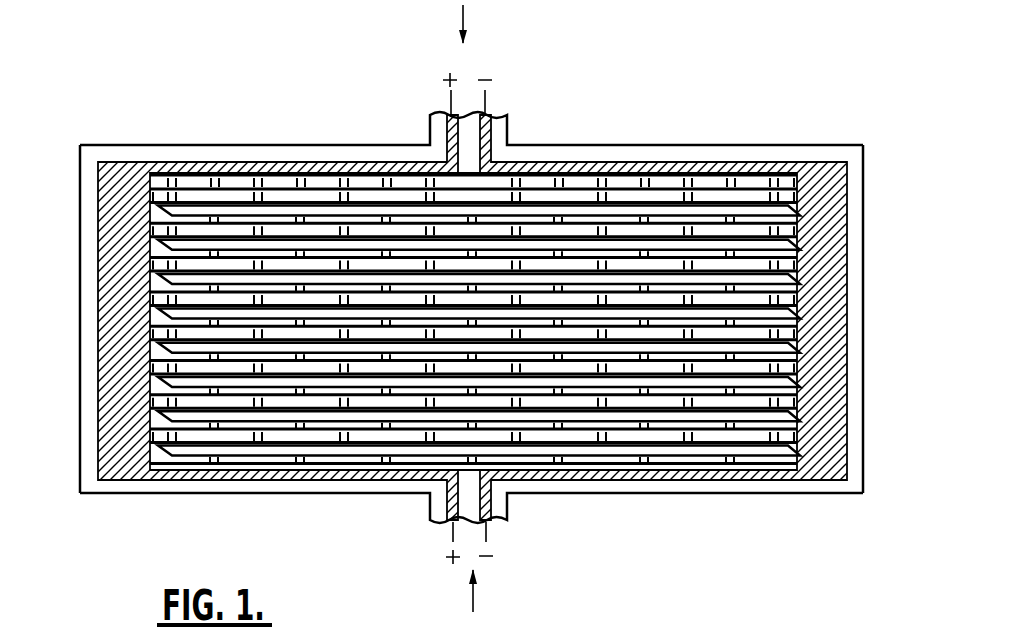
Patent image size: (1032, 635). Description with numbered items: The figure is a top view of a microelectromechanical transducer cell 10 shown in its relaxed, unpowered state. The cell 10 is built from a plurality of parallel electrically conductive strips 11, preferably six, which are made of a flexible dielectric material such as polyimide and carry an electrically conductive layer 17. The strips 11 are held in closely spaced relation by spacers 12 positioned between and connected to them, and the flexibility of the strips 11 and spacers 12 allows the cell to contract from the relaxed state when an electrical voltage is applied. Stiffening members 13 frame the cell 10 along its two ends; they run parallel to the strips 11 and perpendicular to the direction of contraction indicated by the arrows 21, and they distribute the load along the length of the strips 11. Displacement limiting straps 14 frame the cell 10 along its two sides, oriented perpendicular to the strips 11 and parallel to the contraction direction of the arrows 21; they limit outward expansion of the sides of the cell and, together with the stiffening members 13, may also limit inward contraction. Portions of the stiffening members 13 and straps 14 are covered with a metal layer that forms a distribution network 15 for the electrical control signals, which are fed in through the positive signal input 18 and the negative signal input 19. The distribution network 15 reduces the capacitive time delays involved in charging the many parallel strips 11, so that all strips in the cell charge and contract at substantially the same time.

The cell 10 is at (233, 120).
The electrically conductive strips 11 is at (335, 327).
The spacers 12 is at (297, 355).
The stiffening members 13 is at (378, 146).
The displacement limiting straps 14 is at (82, 378).
The distribution network 15 is at (297, 162).
The electrically conductive layer 17 is at (580, 225).
The positive signal input 18 is at (447, 78).
The negative signal input 19 is at (482, 78).
The arrow indicating direction of contraction 21 is at (463, 15).